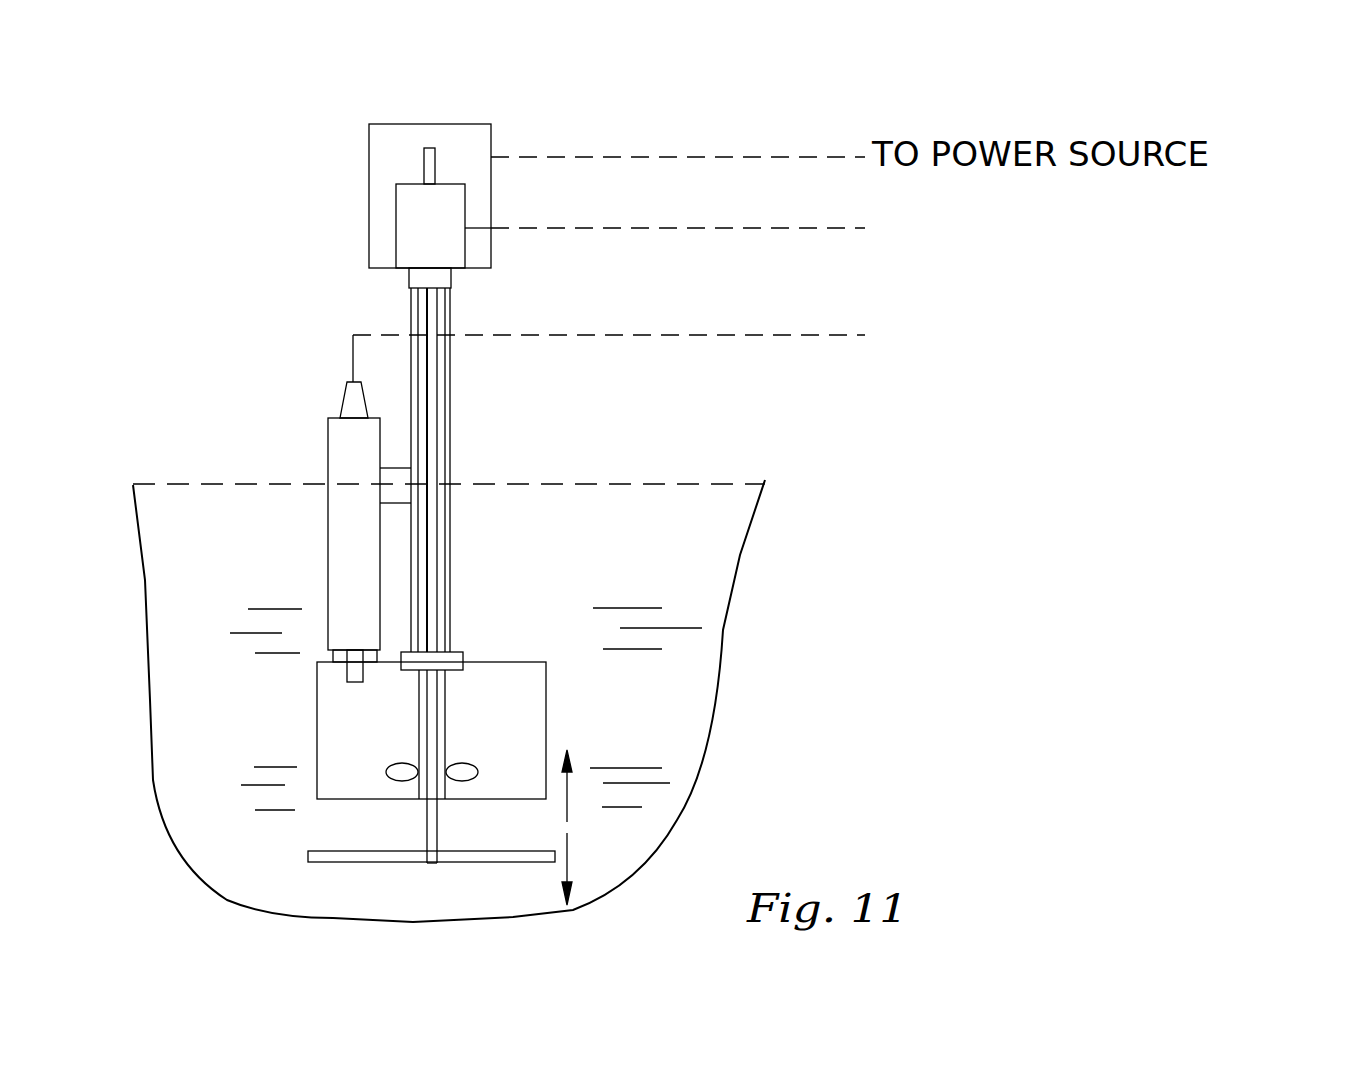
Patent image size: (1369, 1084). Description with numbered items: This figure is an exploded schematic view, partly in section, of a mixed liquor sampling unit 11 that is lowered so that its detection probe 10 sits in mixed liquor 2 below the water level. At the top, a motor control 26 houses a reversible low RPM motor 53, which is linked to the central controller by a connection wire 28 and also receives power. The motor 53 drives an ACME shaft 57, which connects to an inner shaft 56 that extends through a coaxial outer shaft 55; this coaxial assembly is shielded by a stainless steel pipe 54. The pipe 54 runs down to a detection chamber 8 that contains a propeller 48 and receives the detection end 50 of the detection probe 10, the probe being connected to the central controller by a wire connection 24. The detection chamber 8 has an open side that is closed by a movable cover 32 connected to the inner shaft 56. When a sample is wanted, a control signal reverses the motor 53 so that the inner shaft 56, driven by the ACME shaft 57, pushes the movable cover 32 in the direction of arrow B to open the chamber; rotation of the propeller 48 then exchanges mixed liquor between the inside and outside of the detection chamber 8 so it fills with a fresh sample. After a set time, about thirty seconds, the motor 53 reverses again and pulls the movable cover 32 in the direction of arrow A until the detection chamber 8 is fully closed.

The mixed liquor 2 is at (642, 723).
The detection chamber 8 is at (395, 744).
The detection probe 10 is at (328, 440).
The mixed liquor sampling unit 11 is at (278, 539).
The wire connection 24 is at (662, 335).
The motor control 26 is at (491, 130).
The connection wire 28 is at (640, 228).
The movable cover 32 is at (358, 862).
The propeller 48 is at (468, 764).
The detection end 50 is at (342, 672).
The low RPM motor 53 is at (408, 236).
The stainless steel pipe 54 is at (450, 317).
The outer shaft 55 is at (440, 378).
The inner shaft 56 is at (436, 418).
The ACME shaft 57 is at (423, 168).
The arrow A is at (578, 869).
The arrow B is at (577, 786).